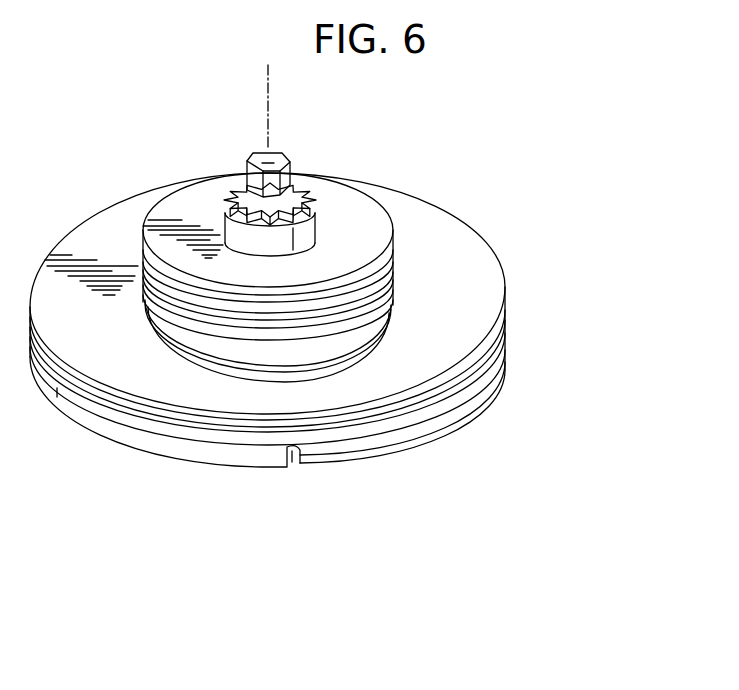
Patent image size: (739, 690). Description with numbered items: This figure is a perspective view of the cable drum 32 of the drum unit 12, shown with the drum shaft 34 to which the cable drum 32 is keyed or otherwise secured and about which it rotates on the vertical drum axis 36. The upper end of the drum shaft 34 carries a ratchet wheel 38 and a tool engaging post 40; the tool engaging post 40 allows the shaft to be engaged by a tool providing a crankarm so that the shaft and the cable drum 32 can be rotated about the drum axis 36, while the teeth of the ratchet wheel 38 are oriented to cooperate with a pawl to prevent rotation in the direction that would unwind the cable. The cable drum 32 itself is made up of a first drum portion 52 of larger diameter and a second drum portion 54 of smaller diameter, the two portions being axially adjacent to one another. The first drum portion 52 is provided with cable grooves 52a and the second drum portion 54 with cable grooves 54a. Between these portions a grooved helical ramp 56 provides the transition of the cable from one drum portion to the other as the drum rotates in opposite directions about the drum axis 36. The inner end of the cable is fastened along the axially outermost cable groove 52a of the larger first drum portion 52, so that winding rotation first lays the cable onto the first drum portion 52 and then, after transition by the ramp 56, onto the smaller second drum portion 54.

The drum unit 12 is at (89, 148).
The cable drum 32 is at (253, 471).
The drum shaft 34 is at (312, 200).
The drum axis 36 is at (268, 84).
The ratchet wheel 38 is at (310, 228).
The tool engaging post 40 is at (273, 147).
The first drum portion 52 is at (170, 438).
The cable grooves 52a is at (470, 396).
The second drum portion 54 is at (395, 258).
The cable grooves 54a is at (372, 314).
The grooved helical ramp 56 is at (390, 376).